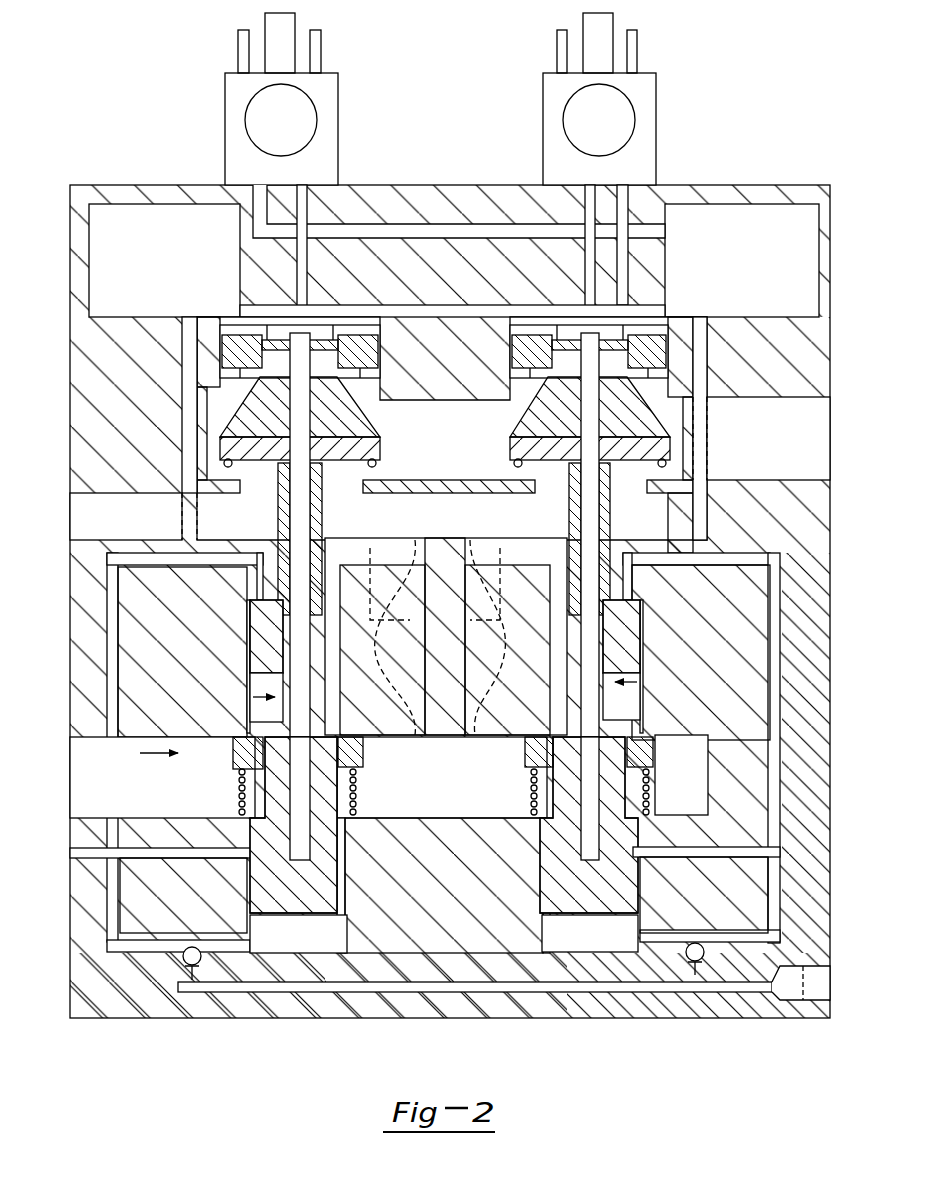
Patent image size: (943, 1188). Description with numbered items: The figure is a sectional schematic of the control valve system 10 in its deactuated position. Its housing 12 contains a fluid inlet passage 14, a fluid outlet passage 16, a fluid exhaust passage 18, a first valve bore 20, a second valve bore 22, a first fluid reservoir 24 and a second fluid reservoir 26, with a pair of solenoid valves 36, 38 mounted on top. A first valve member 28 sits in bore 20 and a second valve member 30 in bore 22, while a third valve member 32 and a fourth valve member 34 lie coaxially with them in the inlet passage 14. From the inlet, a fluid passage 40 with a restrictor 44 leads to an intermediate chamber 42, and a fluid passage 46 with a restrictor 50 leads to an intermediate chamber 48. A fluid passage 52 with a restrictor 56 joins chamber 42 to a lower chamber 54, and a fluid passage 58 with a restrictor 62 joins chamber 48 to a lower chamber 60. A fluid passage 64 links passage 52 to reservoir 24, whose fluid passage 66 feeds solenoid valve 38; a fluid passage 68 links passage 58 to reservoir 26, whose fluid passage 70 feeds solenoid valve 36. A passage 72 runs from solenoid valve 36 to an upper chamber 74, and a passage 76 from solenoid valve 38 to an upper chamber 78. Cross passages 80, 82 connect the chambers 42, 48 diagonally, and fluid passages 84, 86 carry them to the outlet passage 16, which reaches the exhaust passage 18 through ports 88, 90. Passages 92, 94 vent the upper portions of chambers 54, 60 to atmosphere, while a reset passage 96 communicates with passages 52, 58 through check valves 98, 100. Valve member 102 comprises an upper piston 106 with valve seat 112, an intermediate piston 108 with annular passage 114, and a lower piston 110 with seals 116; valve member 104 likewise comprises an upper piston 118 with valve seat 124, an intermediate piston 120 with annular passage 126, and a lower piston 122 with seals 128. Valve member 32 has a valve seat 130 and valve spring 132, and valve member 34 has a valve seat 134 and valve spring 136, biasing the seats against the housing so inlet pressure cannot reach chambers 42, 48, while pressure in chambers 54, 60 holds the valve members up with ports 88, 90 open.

The control valve system 10 is at (718, 100).
The housing 12 is at (790, 195).
The fluid inlet passage 14 is at (164, 792).
The fluid outlet passage 16 is at (116, 537).
The fluid exhaust passage 18 is at (763, 472).
The first valve bore 20 is at (207, 430).
The second valve bore 22 is at (665, 395).
The first fluid reservoir 24 is at (160, 272).
The second fluid reservoir 26 is at (739, 272).
The first valve member 28 is at (300, 740).
The second valve member 30 is at (630, 640).
The third valve member 32 is at (240, 770).
The fourth valve member 34 is at (675, 712).
The solenoid valve 36 is at (293, 136).
The solenoid valve 38 is at (611, 136).
The fluid passage 40 is at (406, 735).
The restrictor 44 is at (422, 735).
The fluid passage 46 is at (445, 735).
The restrictor 50 is at (465, 735).
The intermediate chamber 42 is at (250, 697).
The intermediate chamber 48 is at (640, 697).
The fluid passage 52 is at (100, 935).
The lower chamber 54 is at (309, 949).
The restrictor 56 is at (257, 572).
The fluid passage 58 is at (775, 822).
The lower chamber 60 is at (601, 949).
The restrictor 62 is at (668, 560).
The fluid passage 64 is at (187, 417).
The fluid passage 66 is at (388, 310).
The fluid passage 68 is at (705, 340).
The fluid passage 70 is at (438, 228).
The passage 72 is at (302, 265).
The upper chamber 74 is at (275, 328).
The passage 76 is at (588, 252).
The upper chamber 78 is at (625, 330).
The cross passage 80 is at (478, 552).
The cross passage 82 is at (418, 552).
The fluid passage 84 is at (510, 548).
The fluid passage 86 is at (372, 548).
The port 88 is at (357, 485).
The port 90 is at (520, 468).
The passage 92 is at (140, 852).
The passage 94 is at (700, 920).
The reset passage 96 is at (290, 995).
The check valve 98 is at (195, 962).
The check valve 100 is at (690, 962).
The valve member 102 is at (140, 754).
The valve member 104 is at (632, 697).
The upper piston 106 is at (215, 362).
The intermediate piston 108 is at (250, 645).
The lower piston 110 is at (130, 975).
The valve seat 112 is at (233, 463).
The annular passage 114 is at (247, 604).
The seals 116 is at (337, 900).
The upper piston 118 is at (660, 365).
The intermediate piston 120 is at (622, 614).
The lower piston 122 is at (617, 870).
The valve seat 124 is at (668, 447).
The annular passage 126 is at (665, 590).
The seals 128 is at (545, 900).
The valve seat 130 is at (230, 808).
The valve spring 132 is at (105, 884).
The valve seat 134 is at (650, 790).
The valve spring 136 is at (648, 790).